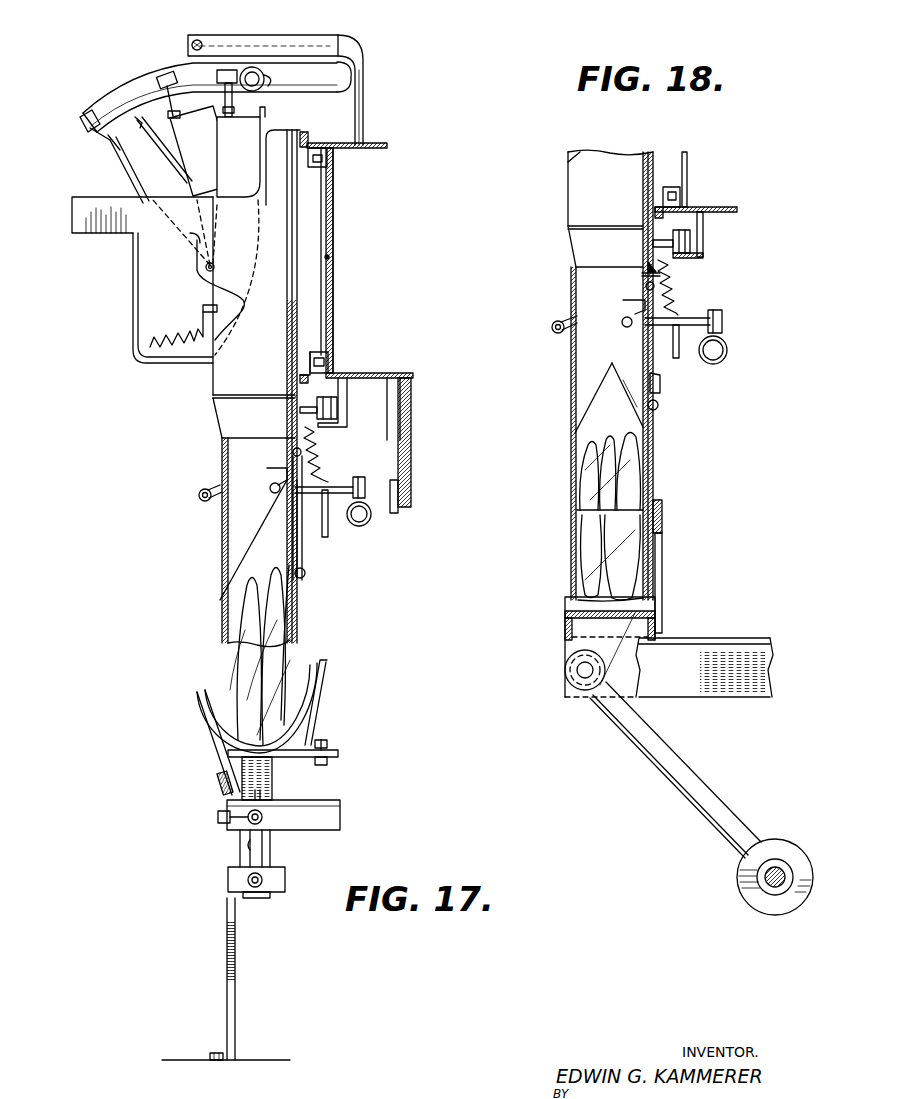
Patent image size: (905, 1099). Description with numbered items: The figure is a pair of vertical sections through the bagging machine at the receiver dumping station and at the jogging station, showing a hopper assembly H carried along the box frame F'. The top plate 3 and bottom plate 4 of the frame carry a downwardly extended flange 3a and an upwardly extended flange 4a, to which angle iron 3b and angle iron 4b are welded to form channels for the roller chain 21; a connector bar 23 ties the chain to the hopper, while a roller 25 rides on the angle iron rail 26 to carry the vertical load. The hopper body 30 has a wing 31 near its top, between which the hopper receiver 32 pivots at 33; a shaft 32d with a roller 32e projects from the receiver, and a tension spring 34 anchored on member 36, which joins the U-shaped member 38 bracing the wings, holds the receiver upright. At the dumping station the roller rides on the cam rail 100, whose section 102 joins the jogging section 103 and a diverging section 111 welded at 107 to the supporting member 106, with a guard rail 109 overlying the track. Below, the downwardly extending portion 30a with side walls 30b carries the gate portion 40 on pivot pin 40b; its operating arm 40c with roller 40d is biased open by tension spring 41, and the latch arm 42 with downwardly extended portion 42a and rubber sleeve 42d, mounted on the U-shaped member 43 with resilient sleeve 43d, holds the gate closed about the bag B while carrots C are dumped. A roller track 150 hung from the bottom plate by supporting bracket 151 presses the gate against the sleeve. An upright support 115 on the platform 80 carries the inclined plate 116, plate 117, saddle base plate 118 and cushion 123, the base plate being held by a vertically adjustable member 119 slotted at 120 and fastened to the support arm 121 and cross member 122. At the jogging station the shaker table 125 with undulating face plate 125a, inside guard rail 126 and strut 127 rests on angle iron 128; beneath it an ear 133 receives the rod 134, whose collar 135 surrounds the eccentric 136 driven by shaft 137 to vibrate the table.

In FIG. 17, the top plate 3 is at (387, 142).
In FIG. 17, the downwardly extended flange 3a is at (333, 210).
In FIG. 17, the angle iron 3b is at (330, 170).
In FIG. 17, the bottom plate 4 is at (388, 373).
In FIG. 18, the bottom plate 4 is at (733, 207).
In FIG. 17, the upwardly extended flange 4a is at (333, 290).
In FIG. 17, the angle iron 4b is at (320, 352).
In FIG. 17, the roller chain 21 is at (327, 157).
In FIG. 17, the connector bar 23 is at (304, 133).
In FIG. 17, the roller 25 is at (294, 407).
In FIG. 18, the roller 25 is at (680, 193).
In FIG. 17, the angle iron rail 26 is at (348, 418).
In FIG. 18, the angle iron rail 26 is at (703, 255).
In FIG. 17, the hopper body 30 is at (225, 384).
In FIG. 18, the hopper body 30 is at (568, 213).
In FIG. 17, the downwardly extending portion 30a is at (228, 543).
In FIG. 18, the downwardly extending portion 30a is at (573, 280).
In FIG. 17, the side walls 30b is at (268, 513).
In FIG. 18, the side walls 30b is at (610, 362).
In FIG. 17, the wing 31 is at (86, 233).
In FIG. 17, the hopper receiver 32 is at (200, 178).
In FIG. 17, the shaft 32d is at (98, 136).
In FIG. 17, the roller 32e is at (85, 120).
In FIG. 17, the pivot 33 is at (206, 266).
In FIG. 17, the tension spring 34 is at (193, 310).
In FIG. 17, the member 36 is at (150, 362).
In FIG. 17, the U-shaped member 38 is at (133, 296).
In FIG. 17, the gate portion 40 is at (295, 546).
In FIG. 18, the gate portion 40 is at (636, 418).
In FIG. 17, the pivot pin 40b is at (270, 488).
In FIG. 18, the pivot pin 40b is at (624, 321).
In FIG. 17, the operating arm 40c is at (324, 490).
In FIG. 18, the operating arm 40c is at (700, 316).
In FIG. 17, the roller 40d is at (372, 480).
In FIG. 18, the roller 40d is at (722, 317).
In FIG. 17, the tension spring 41 is at (318, 433).
In FIG. 18, the tension spring 41 is at (675, 271).
In FIG. 18, the latch arm 42 is at (648, 262).
In FIG. 17, the downwardly extended portion 42a is at (326, 518).
In FIG. 18, the downwardly extended portion 42a is at (678, 358).
In FIG. 17, the rubber sleeve 42d is at (208, 490).
In FIG. 18, the rubber sleeve 42d is at (552, 327).
In FIG. 18, the U-shaped member 43 is at (661, 381).
In FIG. 17, the resilient sleeve 43d is at (305, 574).
In FIG. 18, the resilient sleeve 43d is at (659, 404).
In FIG. 17, the platform 80 is at (250, 1060).
In FIG. 17, the cam rail 100 is at (105, 89).
In FIG. 17, the cam track section 102 is at (266, 89).
In FIG. 17, the jogging cam track section 103 is at (133, 82).
In FIG. 17, the supporting member 106 is at (366, 104).
In FIG. 17, the weld 107 is at (351, 69).
In FIG. 17, the guard rail 109 is at (200, 42).
In FIG. 17, the cam track section 111 is at (307, 75).
In FIG. 17, the upright support 115 is at (230, 987).
In FIG. 17, the inclined plate 116 is at (212, 740).
In FIG. 17, the plate 117 is at (316, 710).
In FIG. 17, the saddle base plate 118 is at (315, 764).
In FIG. 17, the vertically adjustable member 119 is at (272, 787).
In FIG. 17, the slot 120 is at (262, 845).
In FIG. 17, the support arm 121 is at (285, 877).
In FIG. 17, the cross member 122 is at (340, 817).
In FIG. 17, the cushion 123 is at (322, 657).
In FIG. 18, the shaker table 125 is at (565, 624).
In FIG. 18, the undulating face plate 125a is at (568, 605).
In FIG. 18, the inside guard rail 126 is at (663, 517).
In FIG. 18, the strut 127 is at (663, 559).
In FIG. 18, the angle iron 128 is at (732, 650).
In FIG. 18, the ear 133 is at (578, 648).
In FIG. 18, the rod 134 is at (690, 796).
In FIG. 18, the collar 135 is at (745, 881).
In FIG. 18, the eccentric 136 is at (777, 860).
In FIG. 18, the shaft 137 is at (775, 887).
In FIG. 17, the roller track 150 is at (372, 524).
In FIG. 18, the roller track 150 is at (728, 348).
In FIG. 17, the supporting bracket 151 is at (411, 480).
In FIG. 17, the hopper assembly H is at (215, 412).
In FIG. 18, the hopper assembly H is at (568, 188).
In FIG. 17, the box frame F' is at (369, 235).
In FIG. 17, the bag B is at (296, 646).
In FIG. 18, the bag B is at (571, 470).
In FIG. 17, the carrots C is at (287, 610).
In FIG. 18, the carrots C is at (633, 470).